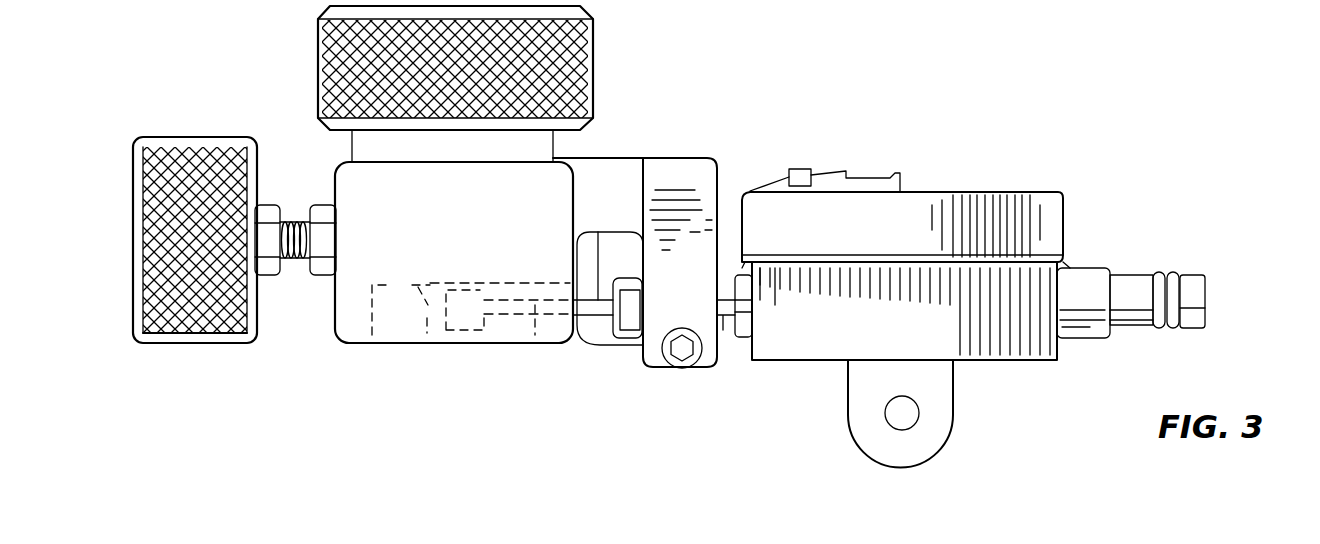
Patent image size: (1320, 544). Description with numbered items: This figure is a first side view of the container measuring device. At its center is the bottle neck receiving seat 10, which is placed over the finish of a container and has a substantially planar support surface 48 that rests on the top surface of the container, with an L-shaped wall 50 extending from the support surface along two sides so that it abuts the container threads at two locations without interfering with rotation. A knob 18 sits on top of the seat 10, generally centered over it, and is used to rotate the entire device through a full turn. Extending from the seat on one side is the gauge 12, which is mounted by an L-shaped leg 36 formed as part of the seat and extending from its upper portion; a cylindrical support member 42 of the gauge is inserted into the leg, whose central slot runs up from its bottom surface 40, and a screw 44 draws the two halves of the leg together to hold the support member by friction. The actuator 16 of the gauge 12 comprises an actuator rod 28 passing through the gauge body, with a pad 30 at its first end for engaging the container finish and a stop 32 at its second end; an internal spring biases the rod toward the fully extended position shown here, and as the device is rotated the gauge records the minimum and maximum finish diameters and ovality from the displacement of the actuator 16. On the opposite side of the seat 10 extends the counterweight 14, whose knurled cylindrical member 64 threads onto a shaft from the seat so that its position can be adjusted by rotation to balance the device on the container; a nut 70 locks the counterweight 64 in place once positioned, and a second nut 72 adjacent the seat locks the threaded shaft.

The central seat 10 is at (378, 355).
The gauge 12 is at (1002, 172).
The counterweight 14 is at (190, 130).
The actuator 16 is at (498, 322).
The knob 18 is at (594, 47).
The actuator rod 28 is at (540, 350).
The pad 30 is at (466, 350).
The stop 32 is at (1130, 288).
The L-shaped leg 36 is at (685, 178).
The bottom surface 40 is at (705, 372).
The cylindrical support member 42 is at (727, 327).
The screw 44 is at (672, 370).
The support surface 48 is at (426, 350).
The L-shaped wall 50 is at (353, 347).
The cylindrical member 64 is at (163, 345).
The nut 70 is at (262, 215).
The second nut 72 is at (325, 230).